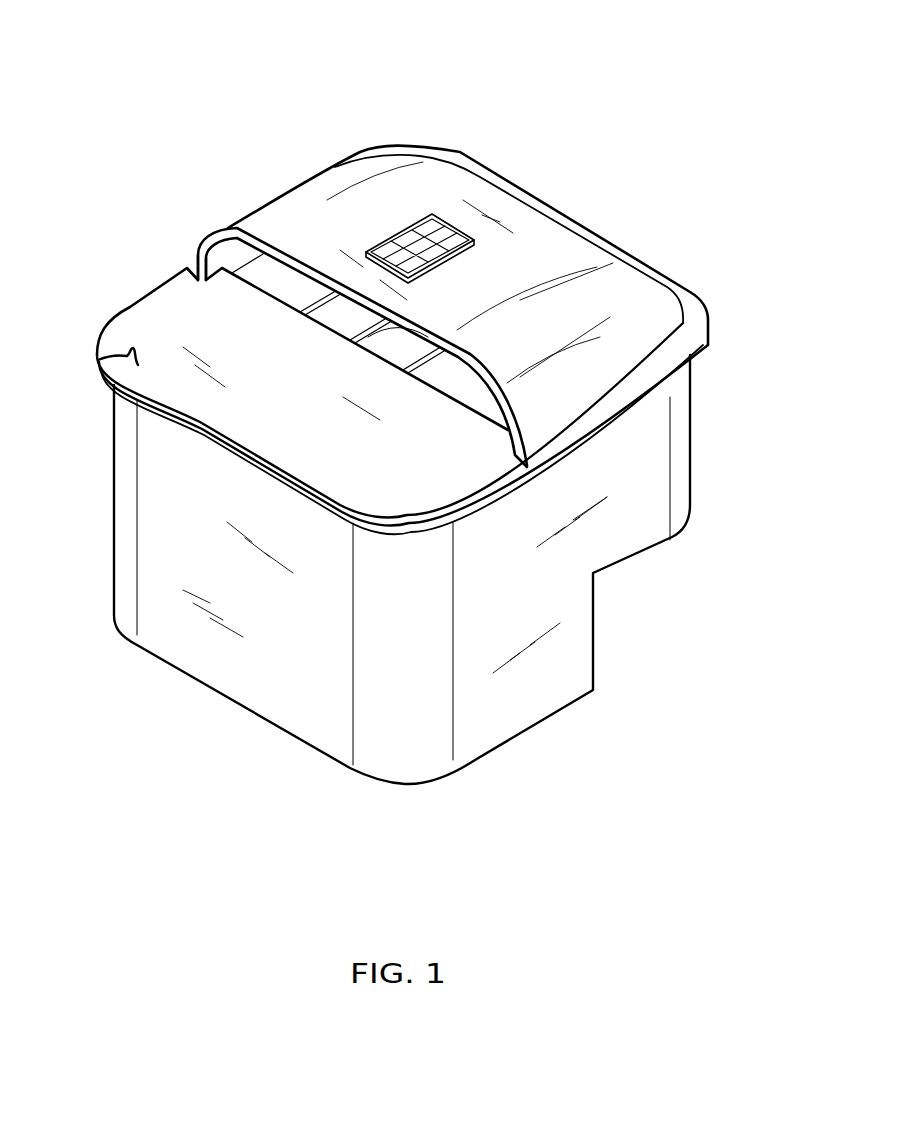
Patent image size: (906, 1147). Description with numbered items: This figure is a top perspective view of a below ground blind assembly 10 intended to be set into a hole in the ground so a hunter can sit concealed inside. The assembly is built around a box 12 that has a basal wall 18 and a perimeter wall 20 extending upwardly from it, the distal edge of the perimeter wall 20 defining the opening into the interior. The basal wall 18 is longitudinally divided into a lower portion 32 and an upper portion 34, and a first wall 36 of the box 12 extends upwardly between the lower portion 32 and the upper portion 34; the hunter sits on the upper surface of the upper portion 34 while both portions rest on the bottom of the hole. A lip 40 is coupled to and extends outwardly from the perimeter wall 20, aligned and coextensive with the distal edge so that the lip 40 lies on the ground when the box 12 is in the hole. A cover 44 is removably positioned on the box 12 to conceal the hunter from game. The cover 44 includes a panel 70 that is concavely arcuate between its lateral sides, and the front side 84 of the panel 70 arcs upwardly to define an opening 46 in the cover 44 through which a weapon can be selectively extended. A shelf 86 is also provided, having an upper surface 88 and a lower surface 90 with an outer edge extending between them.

The below ground blind assembly 10 is at (545, 87).
The box 12 is at (694, 450).
The basal wall 18 is at (517, 736).
The perimeter wall 20 is at (538, 682).
The lower portion 32 is at (470, 762).
The upper portion 34 is at (643, 545).
The first wall 36 is at (594, 651).
The lip 40 is at (708, 322).
The cover 44 is at (308, 150).
The opening 46 is at (297, 299).
The panel 70 is at (281, 194).
The front side 84 is at (201, 252).
The shelf 86 is at (123, 328).
The upper surface 88 is at (98, 362).
The lower surface 90 is at (165, 412).